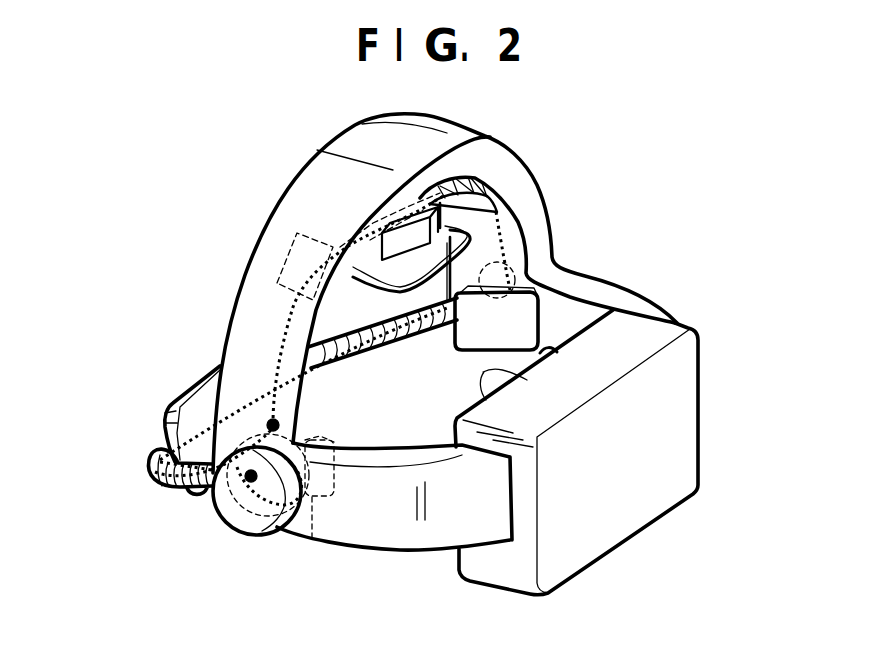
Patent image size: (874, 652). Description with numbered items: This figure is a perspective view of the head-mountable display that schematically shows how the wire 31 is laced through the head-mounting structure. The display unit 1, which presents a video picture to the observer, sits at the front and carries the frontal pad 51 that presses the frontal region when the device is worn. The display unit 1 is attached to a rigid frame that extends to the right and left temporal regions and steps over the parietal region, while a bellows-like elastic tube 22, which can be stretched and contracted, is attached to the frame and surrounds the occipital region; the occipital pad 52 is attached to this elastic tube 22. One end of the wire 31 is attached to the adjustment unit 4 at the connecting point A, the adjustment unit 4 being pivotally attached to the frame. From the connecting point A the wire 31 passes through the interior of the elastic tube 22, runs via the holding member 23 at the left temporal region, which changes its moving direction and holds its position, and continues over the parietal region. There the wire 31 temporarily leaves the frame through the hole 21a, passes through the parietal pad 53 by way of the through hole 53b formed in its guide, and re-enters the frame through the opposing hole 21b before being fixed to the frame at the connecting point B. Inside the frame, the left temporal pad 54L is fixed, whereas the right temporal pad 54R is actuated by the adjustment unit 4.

The display unit 1 is at (613, 533).
The adjustment unit 4 is at (253, 520).
The hole 21a is at (467, 178).
The hole 21b is at (300, 252).
The elastic tube 22 is at (150, 457).
The holding member 23 is at (520, 273).
The wire 31 is at (285, 322).
The frontal pad 51 is at (590, 393).
The occipital pad 52 is at (170, 402).
The parietal pad 53 is at (440, 240).
The through hole 53b is at (385, 222).
The left temporal pad 54L is at (520, 330).
The right temporal pad 54R is at (312, 537).
The connecting point A is at (249, 480).
The connecting point B is at (271, 423).